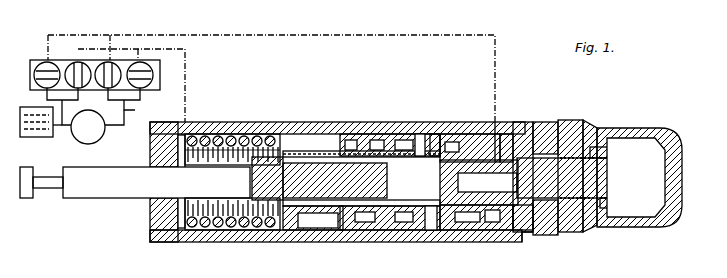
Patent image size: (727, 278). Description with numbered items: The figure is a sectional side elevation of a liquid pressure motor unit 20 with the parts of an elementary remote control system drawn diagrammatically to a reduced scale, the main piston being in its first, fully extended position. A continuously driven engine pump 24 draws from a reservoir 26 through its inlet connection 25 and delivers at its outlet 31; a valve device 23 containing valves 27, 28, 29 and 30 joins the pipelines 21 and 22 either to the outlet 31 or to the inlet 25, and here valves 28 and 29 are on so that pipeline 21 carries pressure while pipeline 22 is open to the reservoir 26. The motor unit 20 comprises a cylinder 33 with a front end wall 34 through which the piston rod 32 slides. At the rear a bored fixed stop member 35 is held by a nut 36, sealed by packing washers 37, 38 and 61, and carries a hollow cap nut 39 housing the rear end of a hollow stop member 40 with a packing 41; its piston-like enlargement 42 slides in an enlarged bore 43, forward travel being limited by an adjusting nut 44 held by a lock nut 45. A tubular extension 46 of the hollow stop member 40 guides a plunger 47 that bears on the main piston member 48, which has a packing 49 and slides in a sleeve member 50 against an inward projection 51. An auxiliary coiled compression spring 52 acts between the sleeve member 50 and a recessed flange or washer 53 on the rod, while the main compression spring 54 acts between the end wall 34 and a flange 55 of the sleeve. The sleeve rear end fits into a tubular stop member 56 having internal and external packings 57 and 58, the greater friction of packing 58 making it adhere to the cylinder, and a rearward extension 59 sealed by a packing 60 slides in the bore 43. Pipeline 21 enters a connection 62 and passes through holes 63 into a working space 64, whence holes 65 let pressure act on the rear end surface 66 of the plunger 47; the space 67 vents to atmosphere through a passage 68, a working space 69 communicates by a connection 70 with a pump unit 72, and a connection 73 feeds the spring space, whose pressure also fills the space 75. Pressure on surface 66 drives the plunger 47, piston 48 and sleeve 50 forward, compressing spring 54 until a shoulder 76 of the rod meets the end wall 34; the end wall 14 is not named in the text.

The end wall 14 is at (172, 242).
The motor unit 20 is at (213, 240).
The pipeline 21 is at (216, 35).
The pipeline 22 is at (182, 47).
The valve device 23 is at (32, 60).
The engine pump 24 is at (100, 138).
The inlet connection 25 is at (76, 138).
The reservoir 26 is at (28, 137).
The valve 27 is at (50, 63).
The valve 28 is at (82, 63).
The valve 29 is at (113, 63).
The valve 30 is at (144, 63).
The outlet 31 is at (135, 110).
The piston rod 32 is at (103, 190).
The cylinder 33 is at (332, 242).
The front end wall 34 is at (160, 232).
The fixed stop member 35 is at (470, 150).
The nut 36 is at (557, 122).
The packing washer 37 is at (492, 122).
The packing washer 38 is at (542, 122).
The hollow cap nut 39 is at (578, 135).
The hollow stop member 40 is at (600, 228).
The packing 41 is at (556, 236).
The piston-like enlargement 42 is at (482, 240).
The enlarged bore 43 is at (488, 240).
The adjusting nut 44 is at (608, 130).
The lock nut 45 is at (636, 130).
The tubular extension 46 is at (178, 208).
The plunger 47 is at (350, 240).
The main piston member 48 is at (275, 230).
The packing 49 is at (245, 230).
The sleeve member 50 is at (300, 151).
The inward projection 51 is at (255, 146).
The auxiliary coiled compression spring 52 is at (210, 136).
The recessed flange or washer 53 is at (190, 152).
The main compression spring 54 is at (230, 136).
The flange 55 is at (270, 135).
The tubular stop member 56 is at (355, 134).
The internal packing 57 is at (318, 134).
The external packing 58 is at (348, 140).
The rearward extension 59 is at (410, 140).
The packing 60 is at (380, 140).
The packing washer 61 is at (418, 134).
The connection 62 is at (507, 134).
The holes 63 is at (520, 122).
The working space 64 is at (515, 235).
The holes 65 is at (532, 240).
The rear end surface 66 is at (412, 235).
The space 67 is at (437, 134).
The passage 68 is at (450, 142).
The working space 69 is at (365, 240).
The connection 70 is at (385, 235).
The pump unit 72 is at (465, 235).
The connection 73 is at (193, 135).
The space 75 is at (305, 230).
The shoulder 76 is at (440, 235).